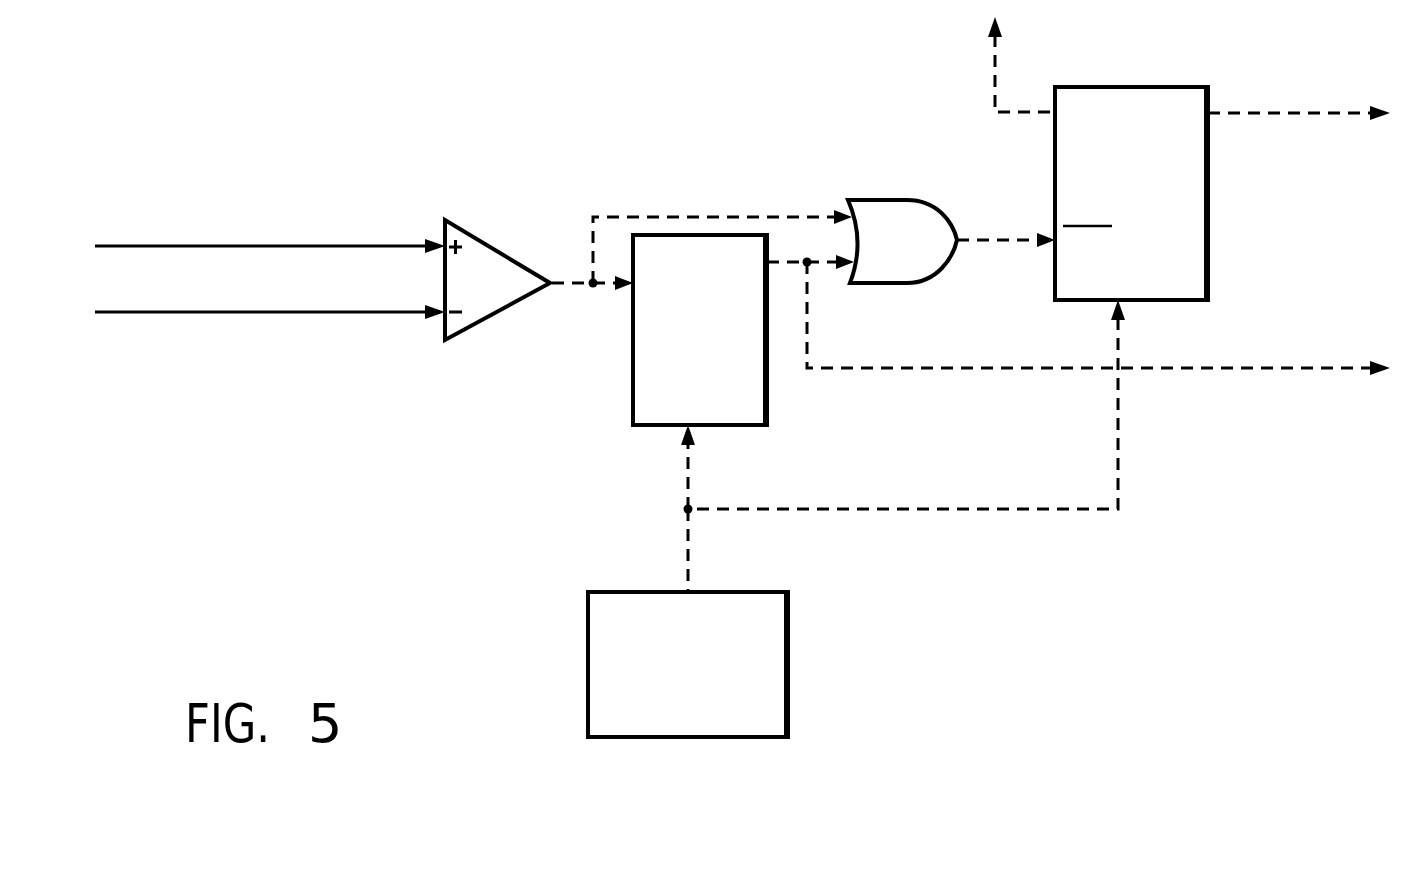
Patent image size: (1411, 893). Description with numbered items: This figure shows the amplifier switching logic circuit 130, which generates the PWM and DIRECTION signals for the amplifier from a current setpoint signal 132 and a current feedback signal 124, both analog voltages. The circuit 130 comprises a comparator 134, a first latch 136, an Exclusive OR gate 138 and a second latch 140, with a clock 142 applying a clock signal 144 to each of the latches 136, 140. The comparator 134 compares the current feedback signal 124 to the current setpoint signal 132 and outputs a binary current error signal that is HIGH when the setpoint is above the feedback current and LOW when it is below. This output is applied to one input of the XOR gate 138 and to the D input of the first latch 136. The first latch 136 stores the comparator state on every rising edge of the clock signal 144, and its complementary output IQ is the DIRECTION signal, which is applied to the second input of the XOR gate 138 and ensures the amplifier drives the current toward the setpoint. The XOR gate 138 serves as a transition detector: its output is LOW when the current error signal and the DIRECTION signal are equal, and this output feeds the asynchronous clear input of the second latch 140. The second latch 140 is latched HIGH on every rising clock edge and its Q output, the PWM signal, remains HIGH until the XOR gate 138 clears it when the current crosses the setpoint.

The current feedback signal 124 is at (397, 314).
The amplifier switching logic circuit 130 is at (696, 170).
The current setpoint signal 132 is at (409, 244).
The comparator 134 is at (502, 252).
The first latch 136 is at (767, 404).
The Exclusive OR gate 138 is at (902, 284).
The second latch 140 is at (1208, 203).
The clock 142 is at (788, 645).
The clock signal 144 is at (688, 467).